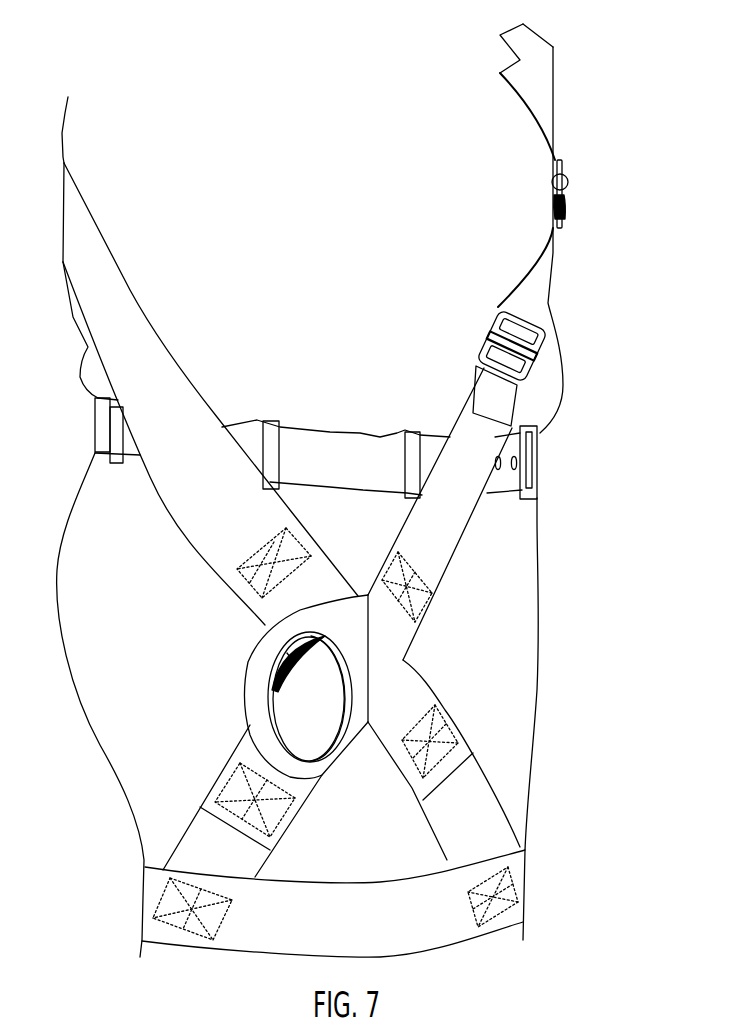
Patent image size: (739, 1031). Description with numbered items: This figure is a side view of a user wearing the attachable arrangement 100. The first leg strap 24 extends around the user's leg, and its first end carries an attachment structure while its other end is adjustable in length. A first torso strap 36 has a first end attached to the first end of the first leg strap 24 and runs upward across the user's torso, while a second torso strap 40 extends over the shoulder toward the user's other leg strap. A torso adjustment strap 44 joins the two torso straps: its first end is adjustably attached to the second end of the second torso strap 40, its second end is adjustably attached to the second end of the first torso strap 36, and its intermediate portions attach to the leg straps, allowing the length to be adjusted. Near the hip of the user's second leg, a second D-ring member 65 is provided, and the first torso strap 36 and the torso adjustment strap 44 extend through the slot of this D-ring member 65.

The harness 100 is at (603, 363).
The second torso strap 40 is at (540, 95).
The first torso strap 36 is at (155, 385).
The torso adjustment strap 44 is at (460, 515).
The second D-ring member 65 is at (257, 690).
The first leg strap 24 is at (425, 932).